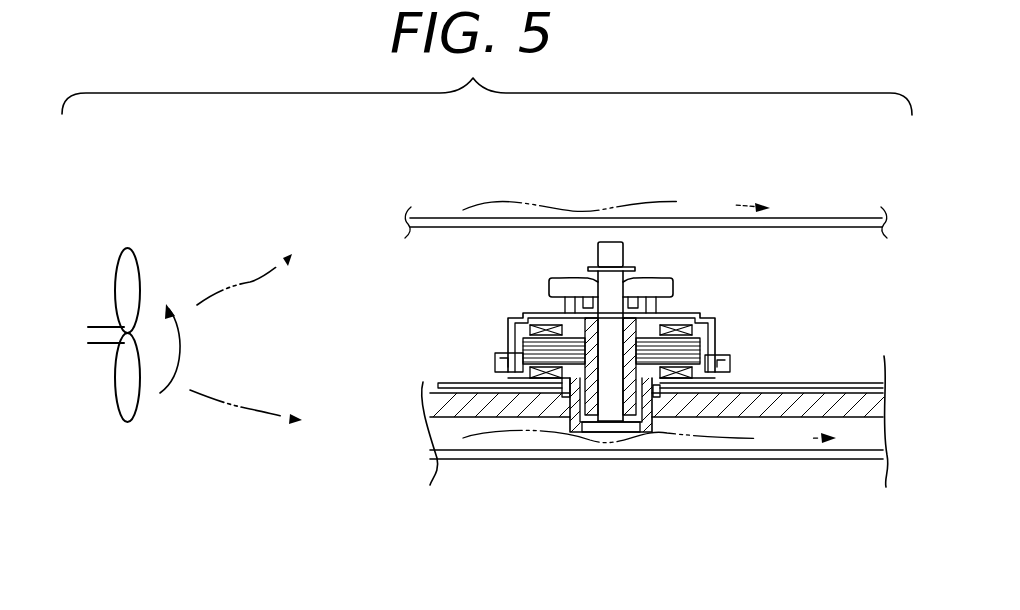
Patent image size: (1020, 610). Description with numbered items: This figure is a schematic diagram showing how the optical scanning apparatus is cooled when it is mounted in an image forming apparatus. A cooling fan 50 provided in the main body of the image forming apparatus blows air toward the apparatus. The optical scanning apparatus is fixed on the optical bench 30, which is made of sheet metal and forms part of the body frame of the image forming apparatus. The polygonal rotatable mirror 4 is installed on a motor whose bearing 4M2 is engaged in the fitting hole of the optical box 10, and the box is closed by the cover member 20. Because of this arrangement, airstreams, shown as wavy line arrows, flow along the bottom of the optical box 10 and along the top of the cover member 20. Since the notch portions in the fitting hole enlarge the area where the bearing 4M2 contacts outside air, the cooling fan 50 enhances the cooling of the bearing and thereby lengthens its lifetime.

The polygonal rotatable mirror 4 is at (561, 342).
The bearing 4M2 is at (580, 397).
The optical box 10 is at (852, 410).
The cover member 20 is at (832, 221).
The optical bench 30 is at (773, 457).
The cooling fan 50 is at (130, 405).